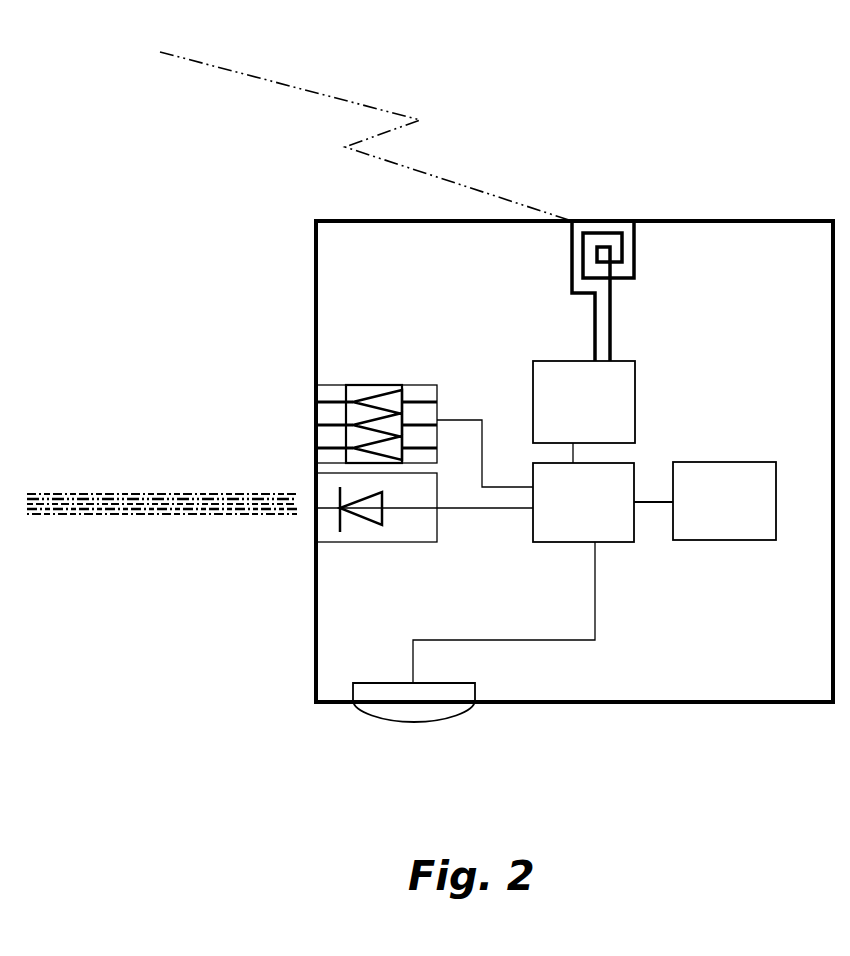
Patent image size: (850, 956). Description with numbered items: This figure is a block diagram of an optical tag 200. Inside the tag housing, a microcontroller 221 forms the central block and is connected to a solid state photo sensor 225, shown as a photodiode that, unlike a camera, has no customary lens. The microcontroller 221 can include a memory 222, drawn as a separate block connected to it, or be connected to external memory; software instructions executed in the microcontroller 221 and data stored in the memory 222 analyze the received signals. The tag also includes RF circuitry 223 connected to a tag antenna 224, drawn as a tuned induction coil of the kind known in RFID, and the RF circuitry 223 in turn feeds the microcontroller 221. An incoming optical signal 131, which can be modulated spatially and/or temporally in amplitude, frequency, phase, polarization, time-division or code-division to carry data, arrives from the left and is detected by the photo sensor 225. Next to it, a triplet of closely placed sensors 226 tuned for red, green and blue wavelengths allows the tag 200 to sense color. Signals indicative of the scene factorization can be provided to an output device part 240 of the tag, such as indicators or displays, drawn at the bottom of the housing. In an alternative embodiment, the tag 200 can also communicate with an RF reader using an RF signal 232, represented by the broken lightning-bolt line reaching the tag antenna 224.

The optical signal 131 is at (141, 492).
The optical tag 200 is at (768, 220).
The microcontroller 221 is at (613, 542).
The memory 222 is at (713, 541).
The RF circuitry 223 is at (577, 361).
The tag antenna 224 is at (585, 219).
The photo sensor 225 is at (341, 543).
The triplet of closely placed sensors 226 is at (358, 385).
The RF signal 232 is at (393, 113).
The output device part 240 is at (375, 722).